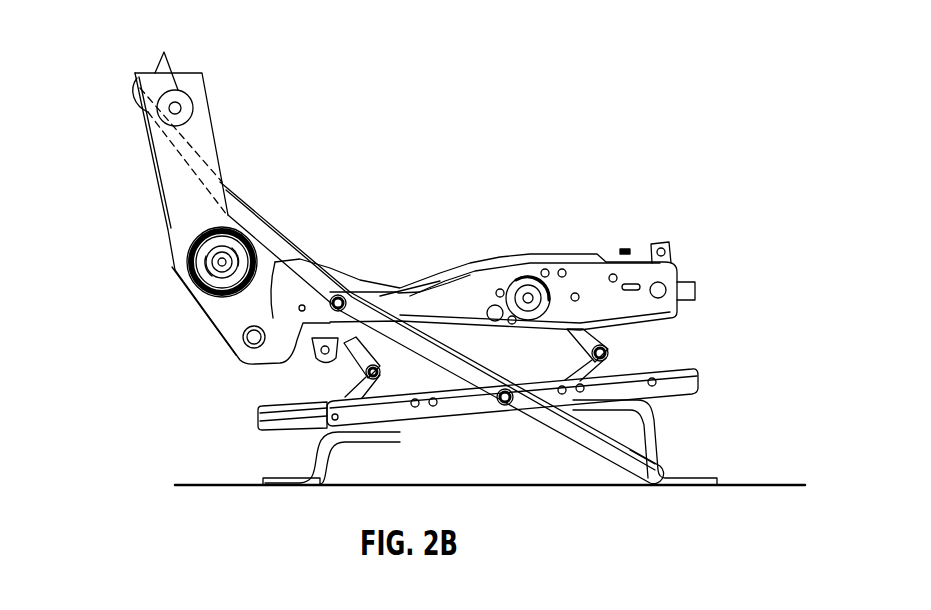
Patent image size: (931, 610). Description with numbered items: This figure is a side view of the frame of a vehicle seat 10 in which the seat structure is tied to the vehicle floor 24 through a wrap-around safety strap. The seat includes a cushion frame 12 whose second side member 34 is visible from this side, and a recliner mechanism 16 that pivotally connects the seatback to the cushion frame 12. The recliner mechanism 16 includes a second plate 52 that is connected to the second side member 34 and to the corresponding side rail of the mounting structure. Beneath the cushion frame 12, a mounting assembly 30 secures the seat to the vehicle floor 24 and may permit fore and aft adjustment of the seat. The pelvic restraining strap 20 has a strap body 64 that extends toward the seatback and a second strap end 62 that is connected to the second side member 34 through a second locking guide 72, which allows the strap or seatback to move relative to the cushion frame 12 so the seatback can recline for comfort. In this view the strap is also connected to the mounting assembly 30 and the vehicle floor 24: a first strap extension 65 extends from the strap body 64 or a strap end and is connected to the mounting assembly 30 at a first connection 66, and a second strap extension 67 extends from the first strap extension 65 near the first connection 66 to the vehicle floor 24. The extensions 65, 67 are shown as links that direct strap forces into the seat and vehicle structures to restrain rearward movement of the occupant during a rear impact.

The vehicle seat 10 is at (558, 62).
The cushion frame 12 is at (679, 256).
The recliner mechanism 16 is at (226, 289).
The pelvic restraining strap 20 is at (247, 194).
The vehicle floor 24 is at (755, 485).
The mounting assembly 30 is at (679, 356).
The second side member 34 is at (418, 286).
The second plate 52 is at (238, 334).
The second strap end 62 is at (298, 254).
The strap body 64 is at (139, 108).
The first strap extension 65 is at (467, 375).
The first connection 66 is at (506, 405).
The second strap extension 67 is at (591, 470).
The second locking guide 72 is at (314, 344).